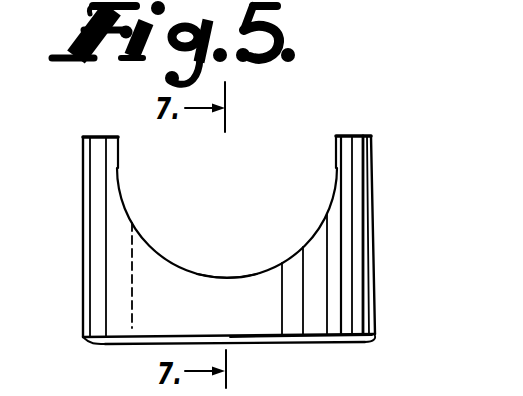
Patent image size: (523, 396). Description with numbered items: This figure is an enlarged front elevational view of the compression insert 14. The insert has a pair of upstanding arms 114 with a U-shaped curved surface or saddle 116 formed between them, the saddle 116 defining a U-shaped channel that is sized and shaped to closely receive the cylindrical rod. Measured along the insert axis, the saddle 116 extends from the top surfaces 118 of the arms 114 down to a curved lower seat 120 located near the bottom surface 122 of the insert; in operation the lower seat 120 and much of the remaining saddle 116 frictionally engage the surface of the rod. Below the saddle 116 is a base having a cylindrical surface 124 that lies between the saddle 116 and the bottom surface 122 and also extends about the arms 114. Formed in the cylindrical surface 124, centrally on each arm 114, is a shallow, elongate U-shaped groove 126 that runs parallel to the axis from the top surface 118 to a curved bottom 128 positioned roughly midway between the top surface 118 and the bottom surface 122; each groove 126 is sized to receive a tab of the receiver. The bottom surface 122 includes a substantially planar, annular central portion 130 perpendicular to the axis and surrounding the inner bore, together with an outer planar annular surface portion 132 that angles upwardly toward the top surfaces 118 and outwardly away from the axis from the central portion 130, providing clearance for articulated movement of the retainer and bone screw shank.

The compression insert 14 is at (374, 152).
The arms 114 is at (86, 156).
The saddle 116 is at (136, 227).
The top surfaces 118 is at (98, 136).
The curved lower seat 120 is at (242, 274).
The bottom surface 122 is at (337, 345).
The cylindrical surface 124 is at (377, 299).
The groove 126 is at (84, 215).
The curved bottom 128 is at (83, 250).
The central portion 130 is at (303, 347).
The outer surface portion 132 is at (100, 340).